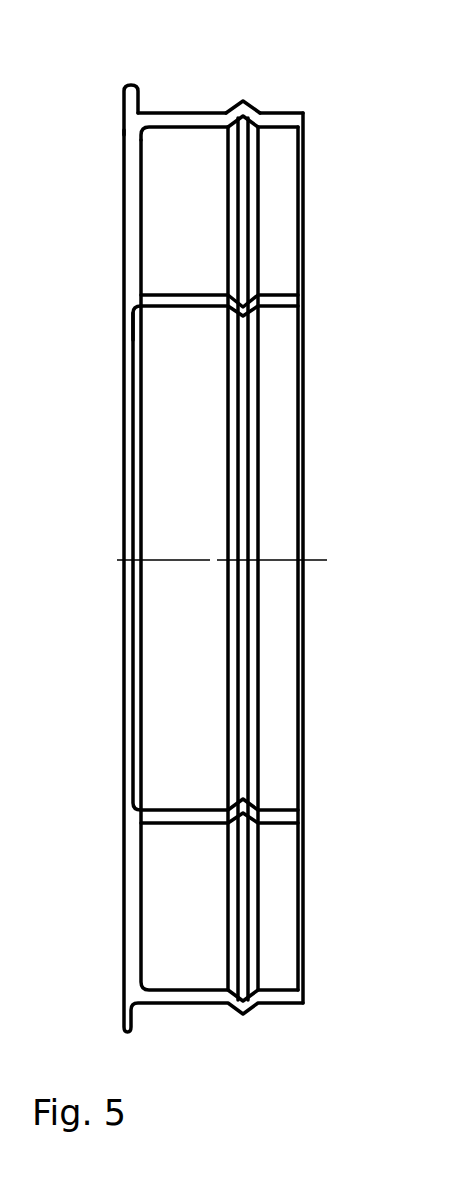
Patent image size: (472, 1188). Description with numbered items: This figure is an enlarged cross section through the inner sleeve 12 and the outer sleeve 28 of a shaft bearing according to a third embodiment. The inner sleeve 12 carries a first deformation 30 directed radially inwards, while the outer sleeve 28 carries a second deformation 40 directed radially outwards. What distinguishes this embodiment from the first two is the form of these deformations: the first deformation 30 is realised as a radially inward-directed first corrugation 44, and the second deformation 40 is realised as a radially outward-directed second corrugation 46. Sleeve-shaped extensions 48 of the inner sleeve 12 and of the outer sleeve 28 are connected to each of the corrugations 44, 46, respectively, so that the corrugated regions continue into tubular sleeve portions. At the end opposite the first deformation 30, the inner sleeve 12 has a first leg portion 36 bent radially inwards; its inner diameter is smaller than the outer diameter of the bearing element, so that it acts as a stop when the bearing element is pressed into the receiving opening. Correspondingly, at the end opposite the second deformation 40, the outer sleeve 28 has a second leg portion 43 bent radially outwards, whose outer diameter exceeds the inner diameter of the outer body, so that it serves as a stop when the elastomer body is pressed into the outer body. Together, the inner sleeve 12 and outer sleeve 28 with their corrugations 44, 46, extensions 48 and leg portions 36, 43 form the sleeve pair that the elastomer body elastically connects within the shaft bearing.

The inner sleeve 12 is at (180, 293).
The outer sleeve 28 is at (203, 123).
The first deformation 30 is at (258, 293).
The first leg portion 36 is at (124, 317).
The second deformation 40 is at (246, 110).
The second leg portion 43 is at (124, 97).
The first corrugation 44 is at (260, 323).
The second corrugation 46 is at (256, 107).
The sleeve-shaped extensions 48 is at (303, 131).